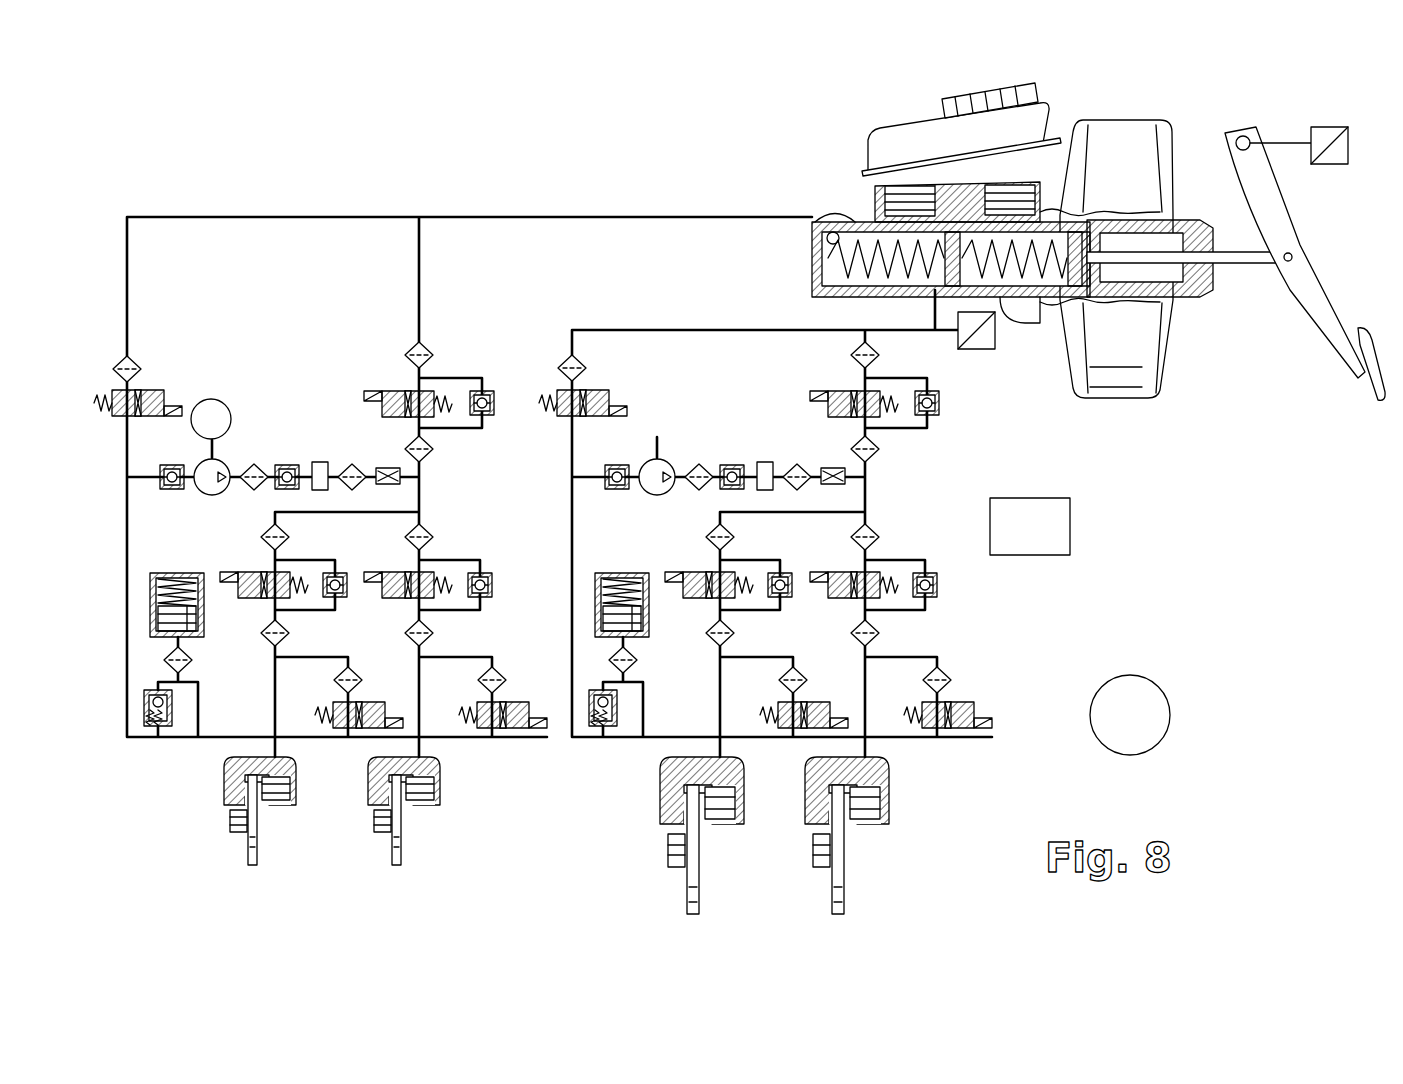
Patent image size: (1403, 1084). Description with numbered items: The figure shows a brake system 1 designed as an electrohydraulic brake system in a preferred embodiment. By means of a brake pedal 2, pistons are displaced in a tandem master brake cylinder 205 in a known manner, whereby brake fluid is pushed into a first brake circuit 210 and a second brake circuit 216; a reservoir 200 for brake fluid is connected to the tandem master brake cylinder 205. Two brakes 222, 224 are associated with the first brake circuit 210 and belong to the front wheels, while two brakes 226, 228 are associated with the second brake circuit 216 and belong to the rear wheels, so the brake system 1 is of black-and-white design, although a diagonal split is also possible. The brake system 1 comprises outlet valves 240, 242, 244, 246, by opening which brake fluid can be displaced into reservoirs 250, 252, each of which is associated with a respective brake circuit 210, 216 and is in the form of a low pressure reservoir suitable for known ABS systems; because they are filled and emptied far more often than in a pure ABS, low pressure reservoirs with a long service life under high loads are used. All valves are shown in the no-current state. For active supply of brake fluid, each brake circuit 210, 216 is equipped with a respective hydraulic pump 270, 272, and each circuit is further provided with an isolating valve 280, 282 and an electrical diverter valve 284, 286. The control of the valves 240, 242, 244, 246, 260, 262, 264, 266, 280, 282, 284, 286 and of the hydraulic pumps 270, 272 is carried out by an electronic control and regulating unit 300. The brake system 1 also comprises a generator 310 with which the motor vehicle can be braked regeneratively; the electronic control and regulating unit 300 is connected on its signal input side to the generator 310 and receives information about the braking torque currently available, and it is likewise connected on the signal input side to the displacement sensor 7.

The brake system 1 is at (588, 164).
The brake pedal 2 is at (1300, 282).
The displacement sensor 7 is at (1335, 165).
The reservoir 200 is at (920, 135).
The tandem master brake cylinder 205 is at (812, 258).
The first brake circuit 210 is at (766, 364).
The second brake circuit 216 is at (296, 279).
The brake 222 is at (668, 812).
The brake 224 is at (812, 812).
The brake 226 is at (232, 800).
The brake 228 is at (377, 800).
The outlet valve 240 is at (797, 703).
The outlet valve 242 is at (942, 703).
The outlet valve 244 is at (352, 703).
The outlet valve 246 is at (497, 703).
The reservoir 250 is at (650, 612).
The reservoir 252 is at (205, 612).
The valve 260 is at (262, 574).
The valve 262 is at (400, 578).
The valve 264 is at (705, 574).
The valve 266 is at (847, 578).
The hydraulic pump 270 is at (205, 492).
The hydraulic pump 272 is at (650, 492).
The isolating valve 280 is at (380, 406).
The isolating valve 282 is at (835, 406).
The electrical diverter valve 284 is at (150, 390).
The electrical diverter valve 286 is at (612, 402).
The electronic control and regulating unit 300 is at (1055, 527).
The generator 310 is at (1148, 713).